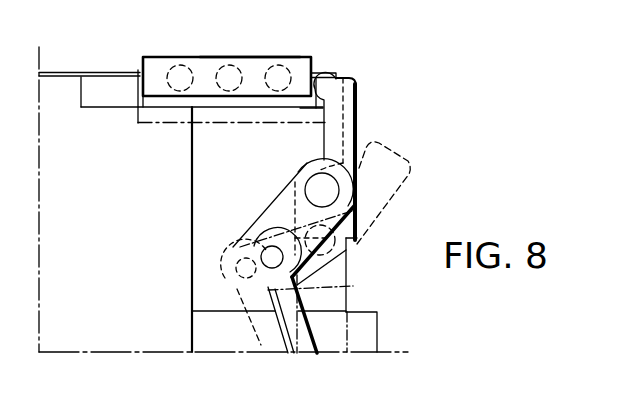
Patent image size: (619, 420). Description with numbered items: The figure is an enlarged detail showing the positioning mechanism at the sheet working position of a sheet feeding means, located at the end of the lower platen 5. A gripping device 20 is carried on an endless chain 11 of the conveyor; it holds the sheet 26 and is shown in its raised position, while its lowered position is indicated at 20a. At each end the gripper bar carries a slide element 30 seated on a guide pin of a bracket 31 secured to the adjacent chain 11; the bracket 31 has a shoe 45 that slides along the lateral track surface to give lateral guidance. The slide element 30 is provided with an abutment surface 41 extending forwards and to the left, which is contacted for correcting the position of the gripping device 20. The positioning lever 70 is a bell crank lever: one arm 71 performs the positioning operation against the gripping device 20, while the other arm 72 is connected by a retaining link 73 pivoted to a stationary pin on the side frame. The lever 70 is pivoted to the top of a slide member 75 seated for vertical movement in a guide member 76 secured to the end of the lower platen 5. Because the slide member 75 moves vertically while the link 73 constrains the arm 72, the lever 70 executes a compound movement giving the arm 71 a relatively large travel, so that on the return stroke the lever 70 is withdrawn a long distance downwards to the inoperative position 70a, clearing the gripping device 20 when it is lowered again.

The lower platen 5 is at (223, 199).
The sheet 26 is at (102, 72).
The endless chain 11 is at (177, 63).
The bracket 31 is at (252, 57).
The shoe 45 is at (258, 68).
The slide element 30 is at (236, 108).
The gripping device 20 is at (282, 110).
The lowered position of gripping device 20a is at (208, 125).
The abutment surface 41 is at (320, 75).
The positioning lever 70 is at (358, 123).
The arm 71 is at (344, 80).
The inoperative position of positioning lever 70a is at (396, 197).
The arm 72 is at (277, 203).
The retaining link 73 is at (312, 332).
The slide member 75 is at (348, 303).
The guide member 76 is at (378, 331).